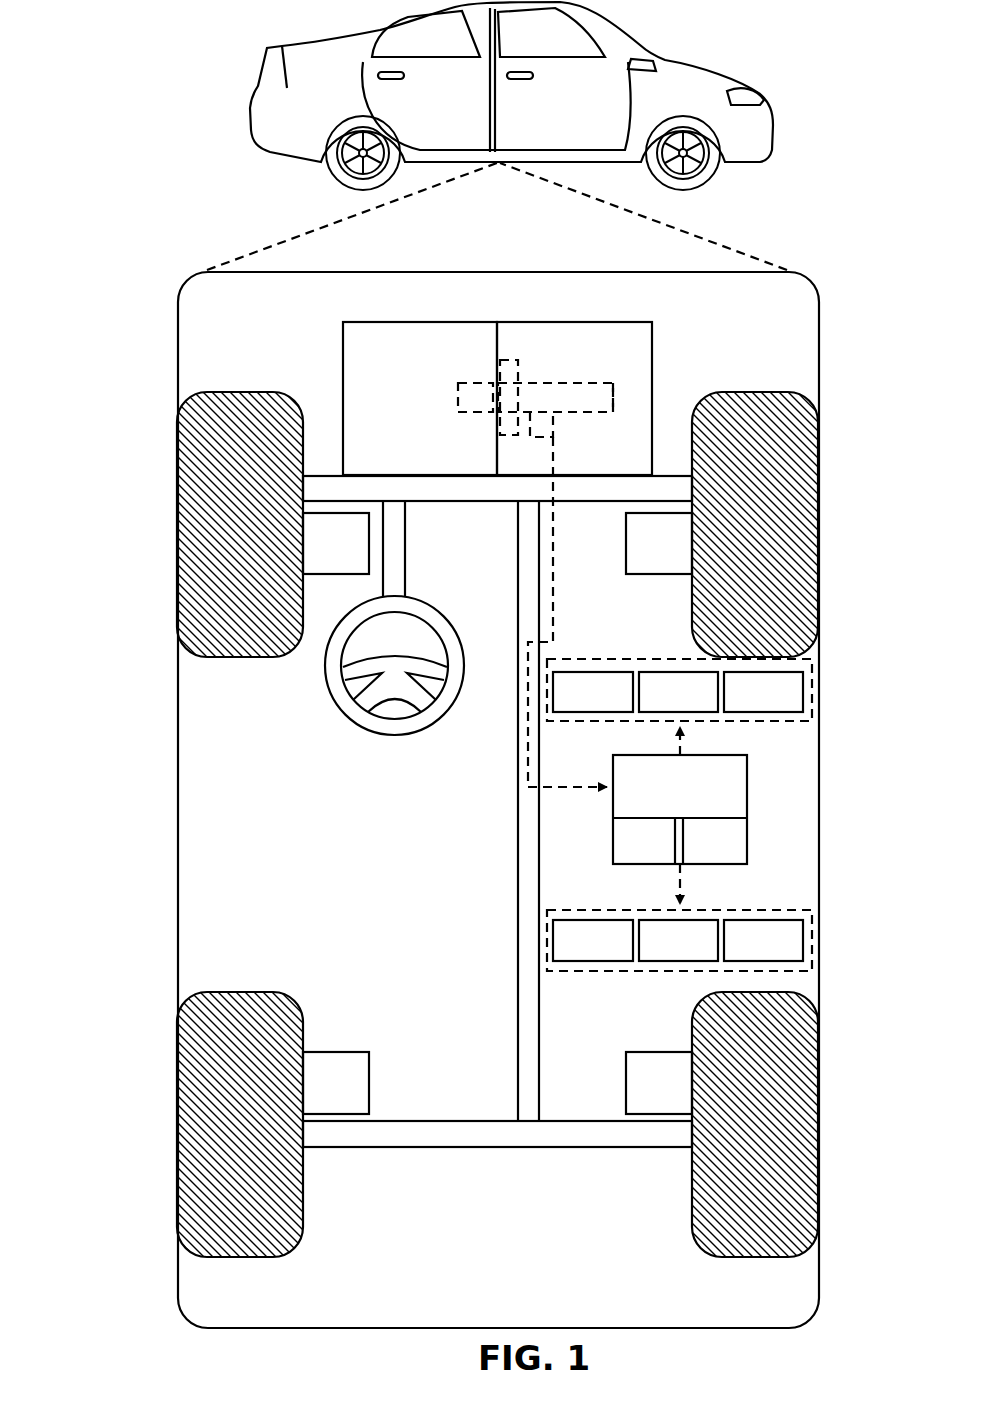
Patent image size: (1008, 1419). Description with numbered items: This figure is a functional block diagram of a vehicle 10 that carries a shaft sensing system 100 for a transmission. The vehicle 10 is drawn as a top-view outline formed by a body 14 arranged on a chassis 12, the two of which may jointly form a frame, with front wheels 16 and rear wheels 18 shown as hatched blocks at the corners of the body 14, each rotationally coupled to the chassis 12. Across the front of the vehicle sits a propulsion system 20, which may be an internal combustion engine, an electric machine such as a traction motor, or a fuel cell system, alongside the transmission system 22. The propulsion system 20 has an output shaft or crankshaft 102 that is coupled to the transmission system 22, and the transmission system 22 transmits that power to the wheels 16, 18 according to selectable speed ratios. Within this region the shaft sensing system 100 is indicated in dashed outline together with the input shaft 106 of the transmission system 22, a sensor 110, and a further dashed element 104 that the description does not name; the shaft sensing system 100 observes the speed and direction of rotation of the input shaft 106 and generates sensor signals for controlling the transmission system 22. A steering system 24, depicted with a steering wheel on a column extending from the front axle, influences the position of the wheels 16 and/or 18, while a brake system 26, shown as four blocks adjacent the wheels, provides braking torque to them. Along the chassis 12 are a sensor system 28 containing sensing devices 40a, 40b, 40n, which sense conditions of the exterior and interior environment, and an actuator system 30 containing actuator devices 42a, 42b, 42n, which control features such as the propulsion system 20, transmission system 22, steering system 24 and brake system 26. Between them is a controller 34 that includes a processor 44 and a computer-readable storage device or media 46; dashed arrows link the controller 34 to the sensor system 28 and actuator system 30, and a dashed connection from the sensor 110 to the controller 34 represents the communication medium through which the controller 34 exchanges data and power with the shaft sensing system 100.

The vehicle 10 is at (262, 80).
The chassis 12 is at (518, 983).
The body 14 is at (178, 762).
The front wheels 16 is at (244, 392).
The rear wheels 18 is at (242, 1258).
The propulsion system 20 is at (437, 415).
The transmission system 22 is at (652, 335).
The steering system 24 is at (421, 534).
The brake system 26 is at (322, 558).
The sensor system 28 is at (679, 656).
The actuator system 30 is at (679, 962).
The controller 34 is at (680, 815).
The sensing device 40a is at (572, 706).
The sensing device 40b is at (658, 706).
The sensing device 40n is at (743, 706).
The actuator device 42a is at (572, 954).
The actuator device 42b is at (658, 954).
The actuator device 42n is at (743, 954).
The processor 44 is at (630, 856).
The computer-readable storage device or media 46 is at (701, 856).
The shaft sensing system 100 is at (557, 374).
The crankshaft 102 is at (475, 390).
The second component 104 is at (501, 360).
The input shaft 106 is at (592, 383).
The sensor 110 is at (547, 425).